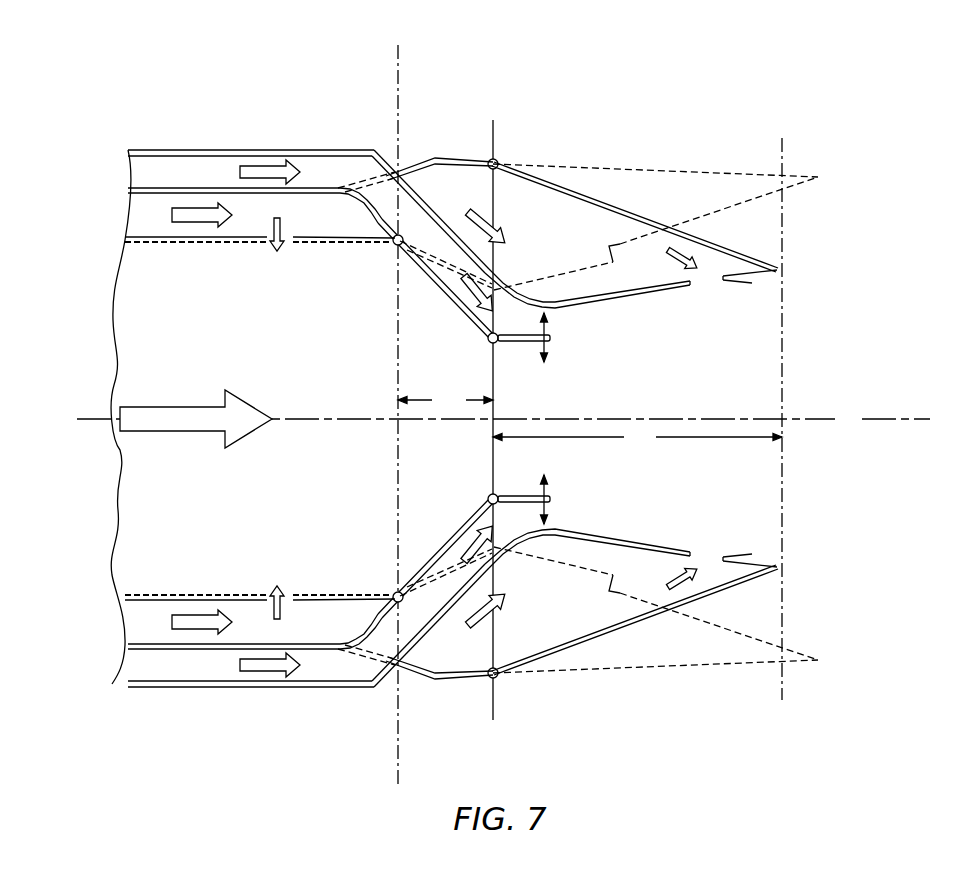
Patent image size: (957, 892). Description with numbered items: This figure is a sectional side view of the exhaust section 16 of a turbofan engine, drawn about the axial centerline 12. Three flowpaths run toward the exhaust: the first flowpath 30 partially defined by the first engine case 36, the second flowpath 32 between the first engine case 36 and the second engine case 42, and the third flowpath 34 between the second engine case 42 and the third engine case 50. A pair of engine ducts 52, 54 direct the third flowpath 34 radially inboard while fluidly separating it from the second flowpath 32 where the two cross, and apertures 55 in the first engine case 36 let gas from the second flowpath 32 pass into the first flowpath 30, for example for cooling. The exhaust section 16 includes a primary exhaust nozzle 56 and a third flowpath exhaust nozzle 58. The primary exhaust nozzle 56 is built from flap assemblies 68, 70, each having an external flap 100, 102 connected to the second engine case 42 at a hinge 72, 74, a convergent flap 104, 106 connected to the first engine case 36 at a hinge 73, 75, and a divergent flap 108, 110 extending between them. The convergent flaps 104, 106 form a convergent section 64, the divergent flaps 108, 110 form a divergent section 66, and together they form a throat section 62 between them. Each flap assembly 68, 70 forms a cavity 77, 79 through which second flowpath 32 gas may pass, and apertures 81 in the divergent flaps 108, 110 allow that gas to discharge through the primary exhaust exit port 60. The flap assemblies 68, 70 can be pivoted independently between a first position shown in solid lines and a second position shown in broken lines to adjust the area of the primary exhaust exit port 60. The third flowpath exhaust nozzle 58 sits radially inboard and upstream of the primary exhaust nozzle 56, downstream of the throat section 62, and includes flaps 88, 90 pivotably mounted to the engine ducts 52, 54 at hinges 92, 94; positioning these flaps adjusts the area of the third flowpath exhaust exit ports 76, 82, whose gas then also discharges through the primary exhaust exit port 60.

The axial centerline 12 is at (847, 421).
The exhaust section 16 is at (893, 300).
The first flowpath 30 is at (176, 406).
The second flowpath 32 is at (190, 243).
The third flowpath 34 is at (262, 166).
The first engine case 36 is at (135, 236).
The second engine case 42 is at (135, 186).
The third engine case 50 is at (148, 150).
The engine duct 52 is at (438, 209).
The engine duct 54 is at (440, 630).
The apertures 55 is at (262, 262).
The primary exhaust nozzle 56 is at (795, 260).
The third flowpath exhaust nozzle 58 is at (600, 346).
The primary exhaust exit port 60 is at (795, 356).
The throat section 62 is at (508, 320).
The convergent section 64 is at (445, 400).
The divergent section 66 is at (637, 437).
The flap assembly 68 is at (624, 195).
The flap assembly 70 is at (624, 647).
The hinge 72 is at (493, 158).
The hinge 73 is at (394, 245).
The hinge 74 is at (493, 679).
The hinge 75 is at (394, 592).
The third flowpath exhaust exit port 76 is at (590, 314).
The cavity 77 is at (562, 240).
The cavity 79 is at (542, 615).
The apertures 81 is at (710, 299).
The third flowpath exhaust exit port 82 is at (594, 522).
The flap 88 is at (552, 342).
The flap 90 is at (514, 495).
The hinge 92 is at (499, 345).
The hinge 94 is at (492, 494).
The external flap 100 is at (676, 222).
The external flap 102 is at (676, 617).
The convergent flap 104 is at (432, 278).
The convergent flap 106 is at (432, 560).
The divergent flap 108 is at (746, 283).
The divergent flap 110 is at (746, 554).